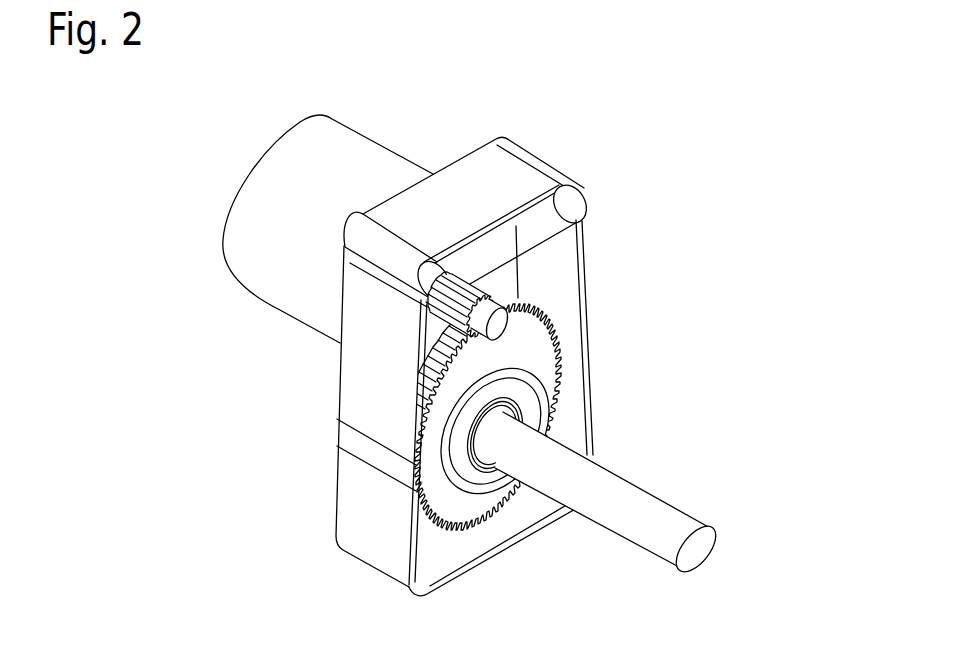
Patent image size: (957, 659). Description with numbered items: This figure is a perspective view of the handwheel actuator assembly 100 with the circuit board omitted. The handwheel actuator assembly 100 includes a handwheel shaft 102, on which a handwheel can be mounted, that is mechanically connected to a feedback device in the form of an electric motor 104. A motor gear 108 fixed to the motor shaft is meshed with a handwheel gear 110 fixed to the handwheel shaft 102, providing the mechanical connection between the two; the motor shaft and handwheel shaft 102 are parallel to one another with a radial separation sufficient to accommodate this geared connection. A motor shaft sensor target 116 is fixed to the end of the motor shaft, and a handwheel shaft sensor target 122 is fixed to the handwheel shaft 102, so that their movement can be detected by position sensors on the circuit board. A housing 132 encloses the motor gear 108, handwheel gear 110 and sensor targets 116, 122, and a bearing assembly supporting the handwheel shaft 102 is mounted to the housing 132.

The handwheel actuator assembly 100 is at (750, 113).
The handwheel shaft 102 is at (653, 493).
The electric motor 104 is at (253, 166).
The motor gear 108 is at (497, 300).
The handwheel gear 110 is at (540, 356).
The motor shaft sensor target 116 is at (498, 323).
The handwheel shaft sensor target 122 is at (526, 400).
The housing 132 is at (357, 368).